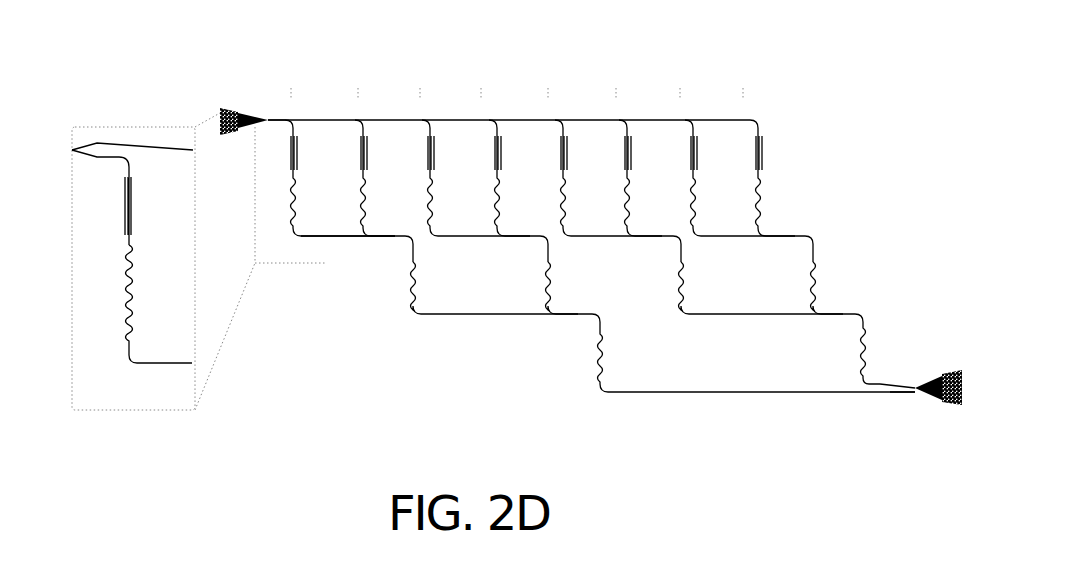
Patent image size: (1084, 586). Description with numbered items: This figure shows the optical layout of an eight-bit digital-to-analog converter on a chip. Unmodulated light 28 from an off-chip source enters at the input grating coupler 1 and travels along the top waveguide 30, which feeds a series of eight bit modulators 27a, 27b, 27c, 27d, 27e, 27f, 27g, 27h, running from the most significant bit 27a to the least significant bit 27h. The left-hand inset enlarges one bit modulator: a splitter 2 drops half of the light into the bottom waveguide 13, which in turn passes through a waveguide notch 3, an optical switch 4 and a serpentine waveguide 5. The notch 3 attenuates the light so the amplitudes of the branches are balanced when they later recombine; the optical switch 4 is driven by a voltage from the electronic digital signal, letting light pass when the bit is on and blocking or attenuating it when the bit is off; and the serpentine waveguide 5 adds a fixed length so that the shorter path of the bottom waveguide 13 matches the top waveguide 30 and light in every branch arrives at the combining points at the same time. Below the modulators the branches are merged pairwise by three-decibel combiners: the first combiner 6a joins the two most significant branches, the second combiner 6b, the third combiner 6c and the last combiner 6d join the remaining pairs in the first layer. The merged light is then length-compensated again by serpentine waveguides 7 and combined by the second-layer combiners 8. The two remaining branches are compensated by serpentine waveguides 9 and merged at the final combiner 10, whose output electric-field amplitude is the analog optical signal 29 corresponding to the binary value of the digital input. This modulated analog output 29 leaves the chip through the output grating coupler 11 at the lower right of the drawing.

The grating coupler 1 is at (247, 111).
The splitter 2 is at (97, 146).
The waveguide notch 3 is at (102, 161).
The optical switch 4 is at (121, 208).
The serpentine waveguide 5 is at (128, 291).
The first combiner 6a is at (389, 241).
The second combiner 6b is at (523, 241).
The third combiner 6c is at (658, 241).
The last combiner 6d is at (793, 241).
The serpentine waveguides 7 is at (409, 290).
The combiners 8 is at (568, 325).
The serpentine waveguides 9 is at (592, 358).
The final combiner 10 is at (906, 393).
The output grating coupler 11 is at (940, 371).
The bottom waveguide 13 is at (334, 242).
The bit modulator 27a is at (62, 106).
The bit modulator 27b is at (372, 151).
The bit modulator 27c is at (471, 151).
The bit modulator 27d is at (501, 151).
The bit modulator 27e is at (601, 151).
The bit modulator 27f is at (635, 151).
The bit modulator 27g is at (733, 151).
The bit modulator 27h is at (765, 151).
The light 28 is at (268, 117).
The analog optical signal 29 is at (913, 382).
The top waveguide 30 is at (356, 145).